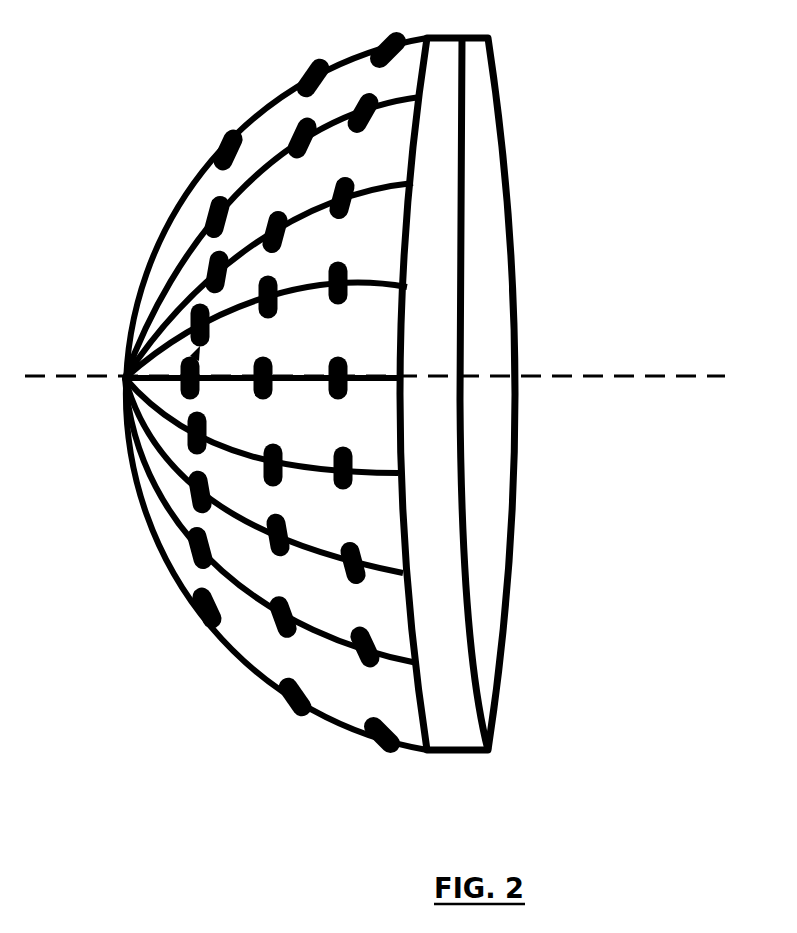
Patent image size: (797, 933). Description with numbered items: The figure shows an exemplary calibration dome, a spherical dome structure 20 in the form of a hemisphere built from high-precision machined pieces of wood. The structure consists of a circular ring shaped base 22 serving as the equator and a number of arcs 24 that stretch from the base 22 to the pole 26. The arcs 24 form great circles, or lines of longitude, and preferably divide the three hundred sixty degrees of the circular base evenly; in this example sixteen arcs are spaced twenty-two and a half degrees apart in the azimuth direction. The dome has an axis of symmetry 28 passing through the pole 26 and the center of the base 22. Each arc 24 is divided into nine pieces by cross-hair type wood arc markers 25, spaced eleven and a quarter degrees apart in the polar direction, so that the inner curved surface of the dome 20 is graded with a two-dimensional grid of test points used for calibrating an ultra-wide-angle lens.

The spherical dome structure 20 is at (242, 394).
The circular ring shaped base 22 is at (457, 394).
The arcs 24 is at (178, 208).
The arc markers 25 is at (282, 703).
The pole 26 is at (124, 377).
The axis of symmetry 28 is at (640, 376).